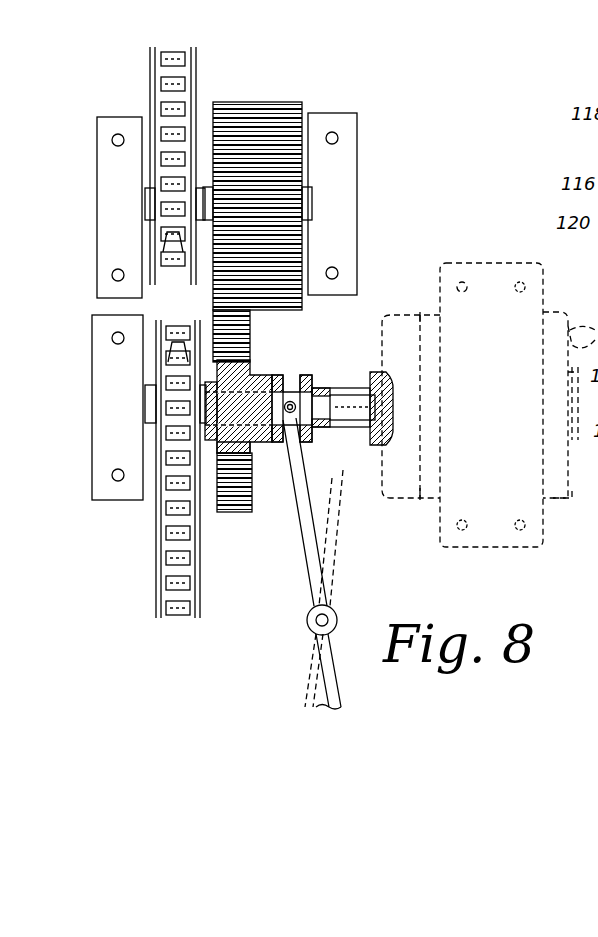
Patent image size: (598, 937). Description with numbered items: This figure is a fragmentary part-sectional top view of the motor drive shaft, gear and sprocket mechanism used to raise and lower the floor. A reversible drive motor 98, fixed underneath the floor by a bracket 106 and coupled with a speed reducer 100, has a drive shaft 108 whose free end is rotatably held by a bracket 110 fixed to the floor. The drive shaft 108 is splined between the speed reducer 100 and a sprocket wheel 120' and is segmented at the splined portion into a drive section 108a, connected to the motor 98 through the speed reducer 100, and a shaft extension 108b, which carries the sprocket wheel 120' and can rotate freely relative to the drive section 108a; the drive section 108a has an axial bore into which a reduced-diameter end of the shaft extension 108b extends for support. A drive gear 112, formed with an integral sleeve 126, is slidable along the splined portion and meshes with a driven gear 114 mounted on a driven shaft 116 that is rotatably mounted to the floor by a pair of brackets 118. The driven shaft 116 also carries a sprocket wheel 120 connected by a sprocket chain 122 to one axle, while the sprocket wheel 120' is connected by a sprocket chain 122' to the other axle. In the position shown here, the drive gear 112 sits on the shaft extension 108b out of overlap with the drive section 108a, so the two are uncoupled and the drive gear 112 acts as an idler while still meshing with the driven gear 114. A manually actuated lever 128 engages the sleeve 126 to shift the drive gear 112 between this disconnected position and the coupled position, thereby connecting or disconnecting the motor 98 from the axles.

The reversible drive motor 98 is at (562, 502).
The speed reducer 100 is at (395, 330).
The bracket 106 is at (455, 272).
The drive shaft 108 is at (146, 397).
The drive section 108a is at (346, 385).
The shaft extension 108b is at (258, 418).
The bracket 110 is at (118, 450).
The drive gear 112 is at (236, 500).
The driven gear 114 is at (280, 112).
The driven shaft 116 is at (148, 203).
The brackets 118 is at (104, 130).
The sprocket wheel 120 is at (114, 239).
The sprocket wheel 120' is at (112, 346).
The sprocket chain 122 is at (210, 166).
The sprocket chain 122' is at (137, 469).
The sleeve 126 is at (284, 386).
The manually actuated lever 128 is at (310, 552).